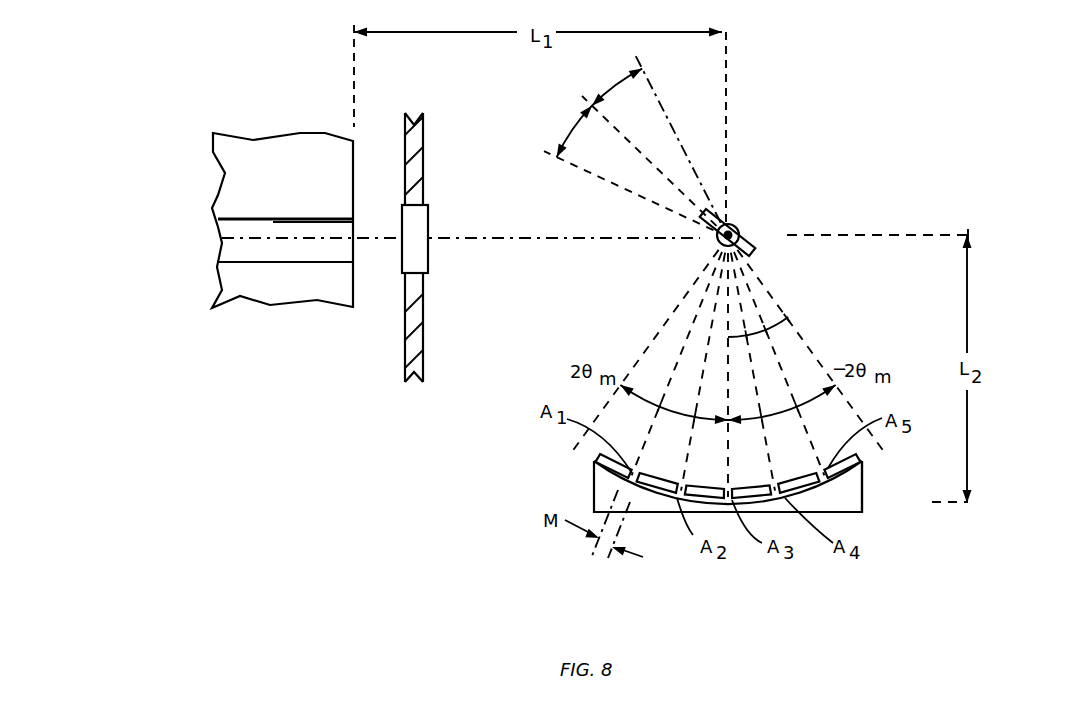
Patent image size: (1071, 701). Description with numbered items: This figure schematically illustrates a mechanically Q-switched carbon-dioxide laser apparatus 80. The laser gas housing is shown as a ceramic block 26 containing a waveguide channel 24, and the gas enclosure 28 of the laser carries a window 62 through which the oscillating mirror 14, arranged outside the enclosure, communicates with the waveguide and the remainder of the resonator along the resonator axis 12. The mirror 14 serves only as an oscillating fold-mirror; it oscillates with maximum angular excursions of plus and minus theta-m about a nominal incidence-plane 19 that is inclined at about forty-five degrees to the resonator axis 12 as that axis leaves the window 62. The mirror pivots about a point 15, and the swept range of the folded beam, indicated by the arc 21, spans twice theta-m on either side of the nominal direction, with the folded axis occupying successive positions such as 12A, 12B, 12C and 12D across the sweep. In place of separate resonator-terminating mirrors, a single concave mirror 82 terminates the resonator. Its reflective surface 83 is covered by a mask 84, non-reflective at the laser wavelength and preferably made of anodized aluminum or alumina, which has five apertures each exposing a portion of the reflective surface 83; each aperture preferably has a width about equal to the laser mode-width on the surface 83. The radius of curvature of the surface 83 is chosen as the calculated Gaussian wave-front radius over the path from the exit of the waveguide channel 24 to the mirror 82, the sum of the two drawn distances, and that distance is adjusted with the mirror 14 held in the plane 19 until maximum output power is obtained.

The ceramic block 26 is at (317, 126).
The waveguide channel 24 is at (287, 226).
The gas enclosure 28 is at (430, 148).
The window 62 is at (428, 257).
The resonator axis 12 is at (545, 232).
The nominal incidence-plane 19 is at (630, 147).
The mirror pivot 15 is at (732, 224).
The oscillating mirror 14 is at (741, 243).
The scan angle arc 21 is at (788, 317).
The beam position A 12A is at (635, 440).
The beam position B 12B is at (683, 465).
The beam position C 12C is at (808, 463).
The beam position D 12D is at (855, 432).
The concave mirror 82 is at (850, 517).
The reflective surface 83 is at (862, 508).
The mask 84 is at (585, 463).
The mechanically Q-switched CO2 laser apparatus 80 is at (463, 460).